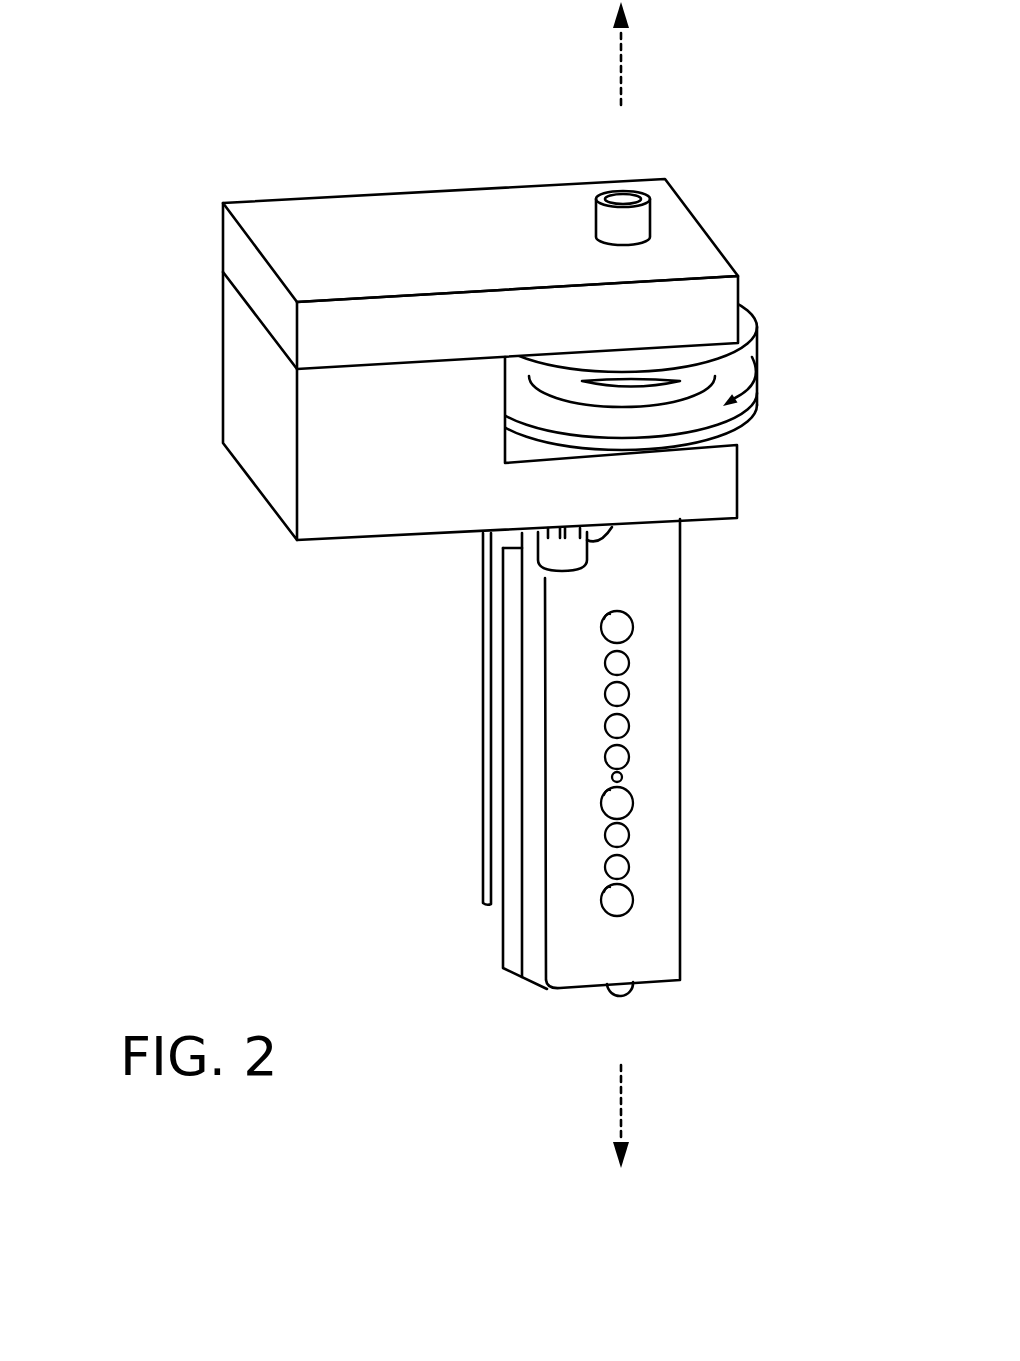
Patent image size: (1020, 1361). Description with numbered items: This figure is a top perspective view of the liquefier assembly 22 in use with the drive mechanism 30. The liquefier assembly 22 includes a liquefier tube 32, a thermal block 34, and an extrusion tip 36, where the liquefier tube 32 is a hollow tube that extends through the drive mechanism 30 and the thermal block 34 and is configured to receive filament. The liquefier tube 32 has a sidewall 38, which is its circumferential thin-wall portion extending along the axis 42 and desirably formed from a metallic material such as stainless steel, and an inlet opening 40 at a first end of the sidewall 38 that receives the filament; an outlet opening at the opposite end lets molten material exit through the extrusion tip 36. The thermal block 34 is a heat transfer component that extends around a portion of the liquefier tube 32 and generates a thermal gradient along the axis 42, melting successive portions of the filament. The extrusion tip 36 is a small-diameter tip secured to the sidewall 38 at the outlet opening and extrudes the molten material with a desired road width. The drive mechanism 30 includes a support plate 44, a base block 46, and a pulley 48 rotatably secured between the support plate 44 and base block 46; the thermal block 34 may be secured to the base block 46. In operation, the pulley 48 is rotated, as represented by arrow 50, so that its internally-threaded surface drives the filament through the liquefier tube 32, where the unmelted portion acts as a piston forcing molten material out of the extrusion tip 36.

The liquefier assembly 22 is at (240, 748).
The drive mechanism 30 is at (127, 324).
The liquefier tube 32 is at (673, 187).
The thermal block 34 is at (670, 714).
The extrusion tip 36 is at (623, 997).
The sidewall 38 is at (602, 220).
The inlet opening 40 is at (628, 186).
The axis 42 is at (621, 60).
The support plate 44 is at (280, 212).
The base block 46 is at (258, 476).
The pulley 48 is at (757, 330).
The arrow 50 is at (756, 366).